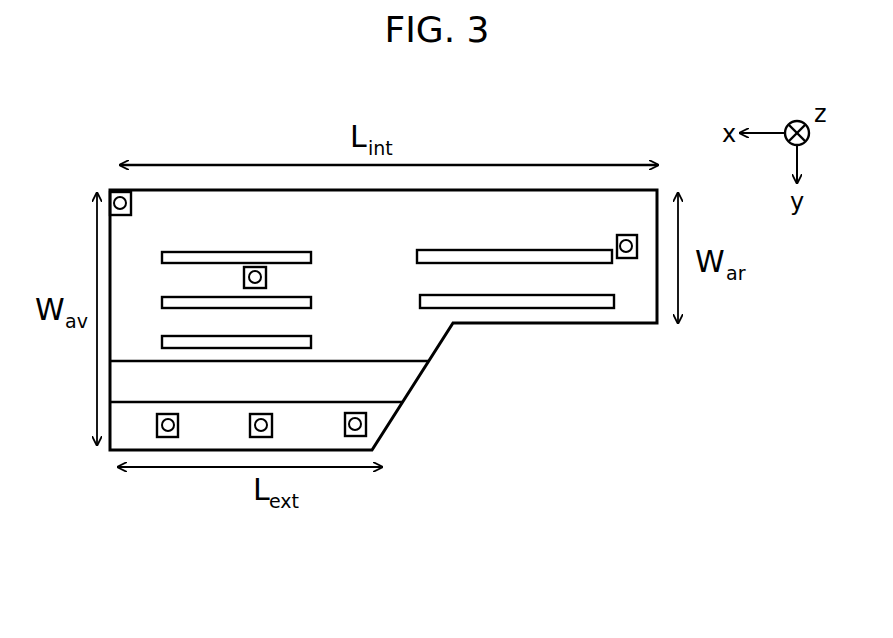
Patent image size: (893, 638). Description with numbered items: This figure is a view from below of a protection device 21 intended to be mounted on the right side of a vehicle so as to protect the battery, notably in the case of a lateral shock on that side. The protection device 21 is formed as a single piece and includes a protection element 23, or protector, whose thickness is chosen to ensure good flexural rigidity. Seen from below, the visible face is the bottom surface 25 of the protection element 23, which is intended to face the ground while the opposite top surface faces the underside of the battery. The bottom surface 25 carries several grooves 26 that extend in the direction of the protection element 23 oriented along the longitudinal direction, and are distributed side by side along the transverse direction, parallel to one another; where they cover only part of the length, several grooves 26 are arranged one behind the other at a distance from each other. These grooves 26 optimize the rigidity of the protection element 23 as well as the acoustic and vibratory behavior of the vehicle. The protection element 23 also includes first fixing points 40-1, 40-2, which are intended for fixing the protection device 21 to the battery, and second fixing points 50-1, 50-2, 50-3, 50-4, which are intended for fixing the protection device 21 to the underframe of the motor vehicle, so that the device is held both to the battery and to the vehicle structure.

The protection device 21 is at (625, 128).
The protection element 23 is at (360, 213).
The bottom surface 25 is at (487, 210).
The grooves 26 is at (572, 297).
The first fixing point 40-1 is at (255, 272).
The first fixing point 40-2 is at (626, 240).
The second fixing point 50-1 is at (168, 437).
The second fixing point 50-2 is at (261, 437).
The second fixing point 50-3 is at (366, 418).
The second fixing point 50-4 is at (120, 198).